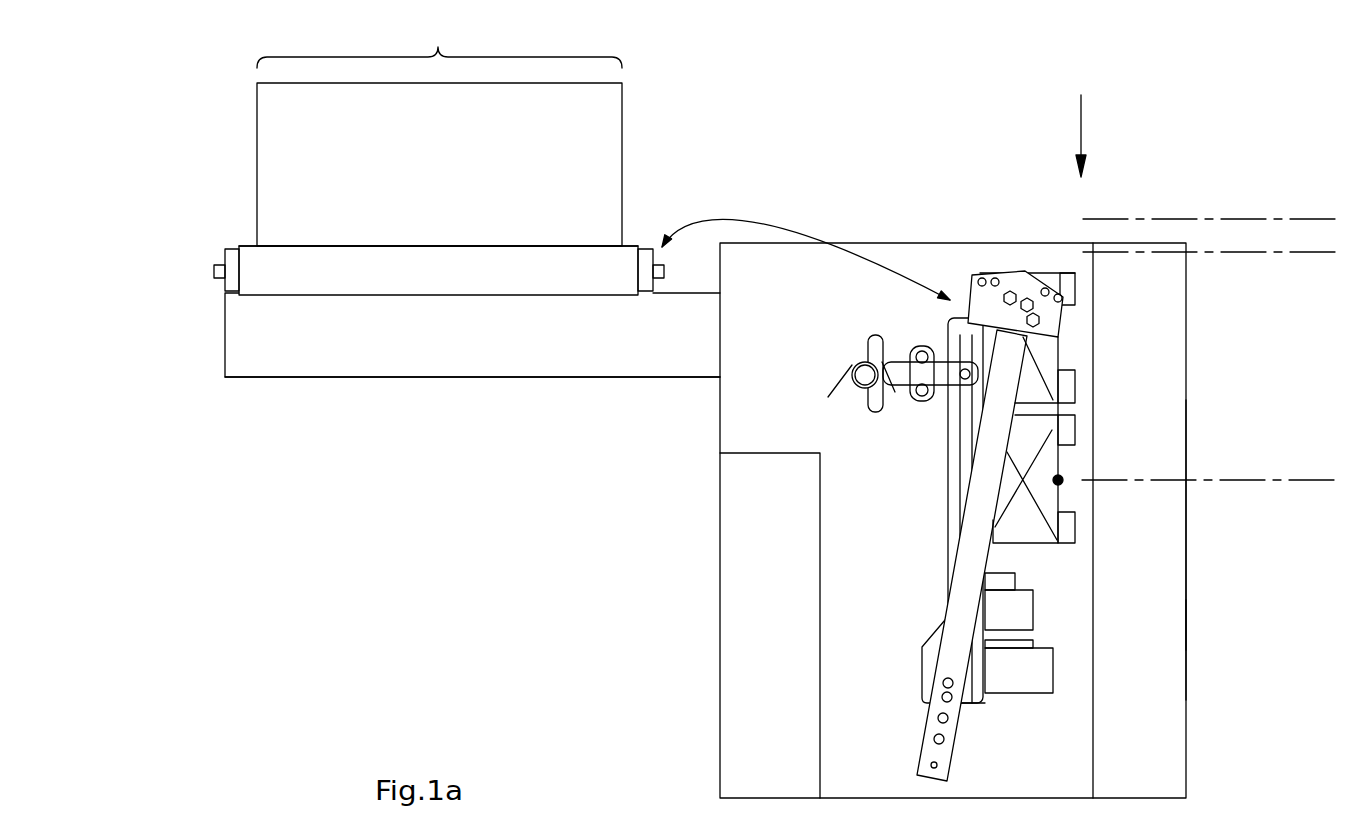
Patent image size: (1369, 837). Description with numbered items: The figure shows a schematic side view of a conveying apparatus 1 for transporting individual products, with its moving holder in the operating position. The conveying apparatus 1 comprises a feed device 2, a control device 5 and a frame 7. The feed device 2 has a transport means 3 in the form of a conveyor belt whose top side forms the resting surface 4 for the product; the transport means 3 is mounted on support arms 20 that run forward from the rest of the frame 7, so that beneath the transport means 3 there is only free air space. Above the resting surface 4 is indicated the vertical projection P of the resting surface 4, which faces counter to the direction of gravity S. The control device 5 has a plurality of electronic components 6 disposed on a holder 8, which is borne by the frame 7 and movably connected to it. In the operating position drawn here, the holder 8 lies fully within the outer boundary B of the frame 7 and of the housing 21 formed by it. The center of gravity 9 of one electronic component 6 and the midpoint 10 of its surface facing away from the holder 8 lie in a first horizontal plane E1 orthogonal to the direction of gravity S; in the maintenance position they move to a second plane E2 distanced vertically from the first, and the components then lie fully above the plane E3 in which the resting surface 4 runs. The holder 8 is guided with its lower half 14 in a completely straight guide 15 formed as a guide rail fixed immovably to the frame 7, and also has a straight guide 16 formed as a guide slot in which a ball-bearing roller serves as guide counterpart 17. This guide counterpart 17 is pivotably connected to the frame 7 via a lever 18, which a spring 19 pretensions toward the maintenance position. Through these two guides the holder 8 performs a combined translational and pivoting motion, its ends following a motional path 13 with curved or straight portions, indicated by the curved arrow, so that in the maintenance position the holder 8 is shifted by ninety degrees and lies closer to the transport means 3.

The conveying apparatus 1 is at (1236, 126).
The feed device 2 is at (331, 408).
The transport means 3 is at (382, 270).
The resting surface 4 is at (445, 247).
The control device 5 is at (1149, 342).
The electronic component 6 is at (1035, 530).
The frame 7 is at (1188, 647).
The holder 8 is at (955, 515).
The center of gravity of the electronic component 9 is at (1030, 477).
The midpoint of the component surface facing away from the holder 10 is at (1062, 482).
The motional path of the front and/or rear end 13 is at (825, 230).
The rear half of the holder 14 is at (922, 678).
The guide 15 is at (965, 603).
The guide 16 is at (966, 473).
The guide counterpart 17 is at (963, 376).
The lever 18 is at (906, 372).
The spring 19 is at (852, 363).
The support arm 20 is at (462, 366).
The housing 21 is at (1188, 543).
The outer boundary of the frame B is at (719, 686).
The vertical projection of the resting surface P is at (439, 133).
The direction of gravity S is at (1092, 136).
The first plane E1 is at (1313, 483).
The second plane E2 is at (1313, 217).
The plane of the resting surface E3 is at (1313, 255).